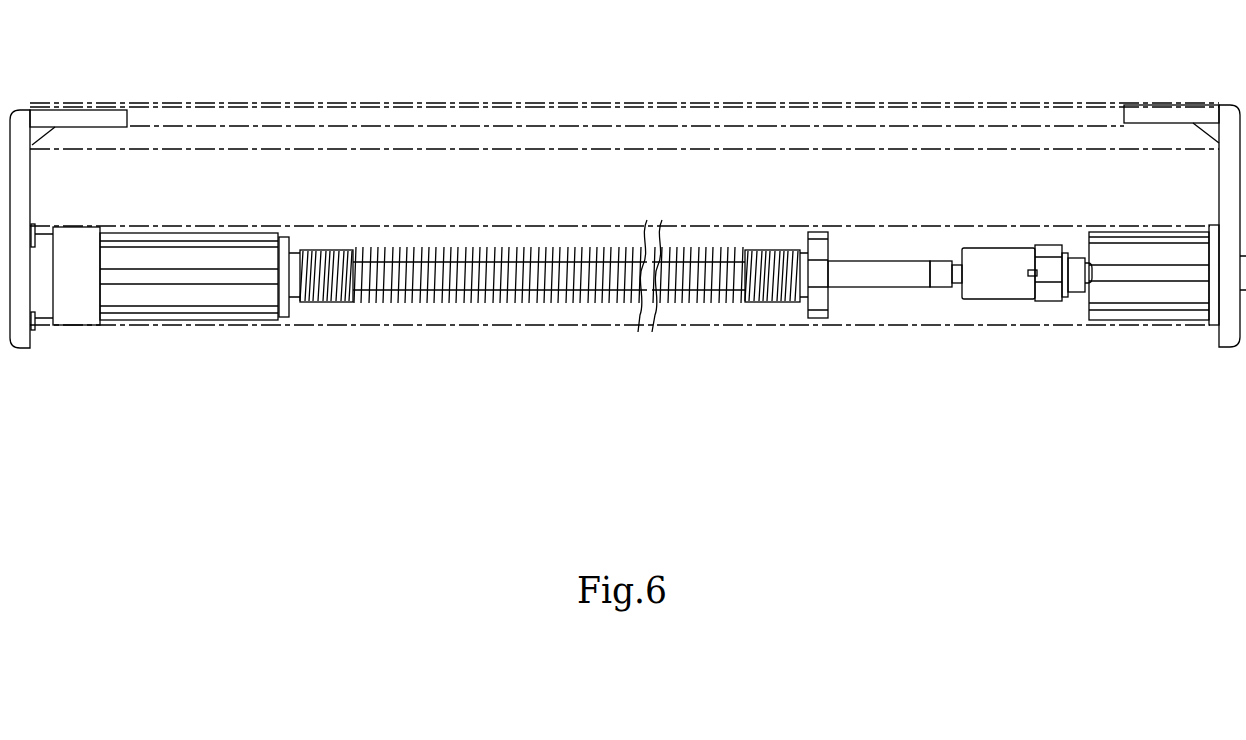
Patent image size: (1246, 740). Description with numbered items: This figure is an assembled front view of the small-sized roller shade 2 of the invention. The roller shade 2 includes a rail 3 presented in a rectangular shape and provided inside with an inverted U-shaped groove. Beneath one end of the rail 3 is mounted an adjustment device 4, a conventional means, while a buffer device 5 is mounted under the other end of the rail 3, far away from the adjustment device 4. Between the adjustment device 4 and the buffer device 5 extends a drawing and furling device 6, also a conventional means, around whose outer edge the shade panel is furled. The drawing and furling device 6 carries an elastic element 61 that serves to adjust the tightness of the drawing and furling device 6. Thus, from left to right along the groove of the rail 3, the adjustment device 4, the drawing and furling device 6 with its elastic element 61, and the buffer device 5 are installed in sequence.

The small-sized roller shade 2 is at (763, 66).
The rail 3 is at (465, 100).
The adjustment device 4 is at (240, 330).
The buffer device 5 is at (1006, 309).
The drawing and furling device 6 is at (631, 312).
The elastic element 61 is at (563, 290).